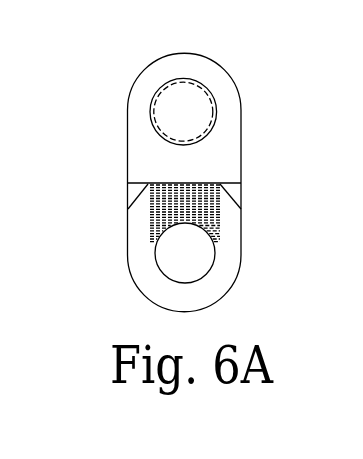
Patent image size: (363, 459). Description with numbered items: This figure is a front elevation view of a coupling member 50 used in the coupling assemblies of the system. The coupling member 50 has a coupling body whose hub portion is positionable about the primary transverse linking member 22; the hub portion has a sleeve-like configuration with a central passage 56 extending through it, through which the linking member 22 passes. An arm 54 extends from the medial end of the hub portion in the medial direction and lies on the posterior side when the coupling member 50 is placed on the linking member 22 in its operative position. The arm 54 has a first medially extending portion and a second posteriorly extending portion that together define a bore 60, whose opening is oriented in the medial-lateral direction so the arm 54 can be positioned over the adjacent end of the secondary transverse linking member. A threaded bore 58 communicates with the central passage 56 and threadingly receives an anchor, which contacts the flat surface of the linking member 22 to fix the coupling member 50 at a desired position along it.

The coupling member 50 is at (257, 87).
The bore 60 is at (188, 98).
The arm 54 is at (241, 101).
The threaded bore 58 is at (147, 209).
The central passage 56 is at (178, 256).
The linking member 22 is at (241, 284).